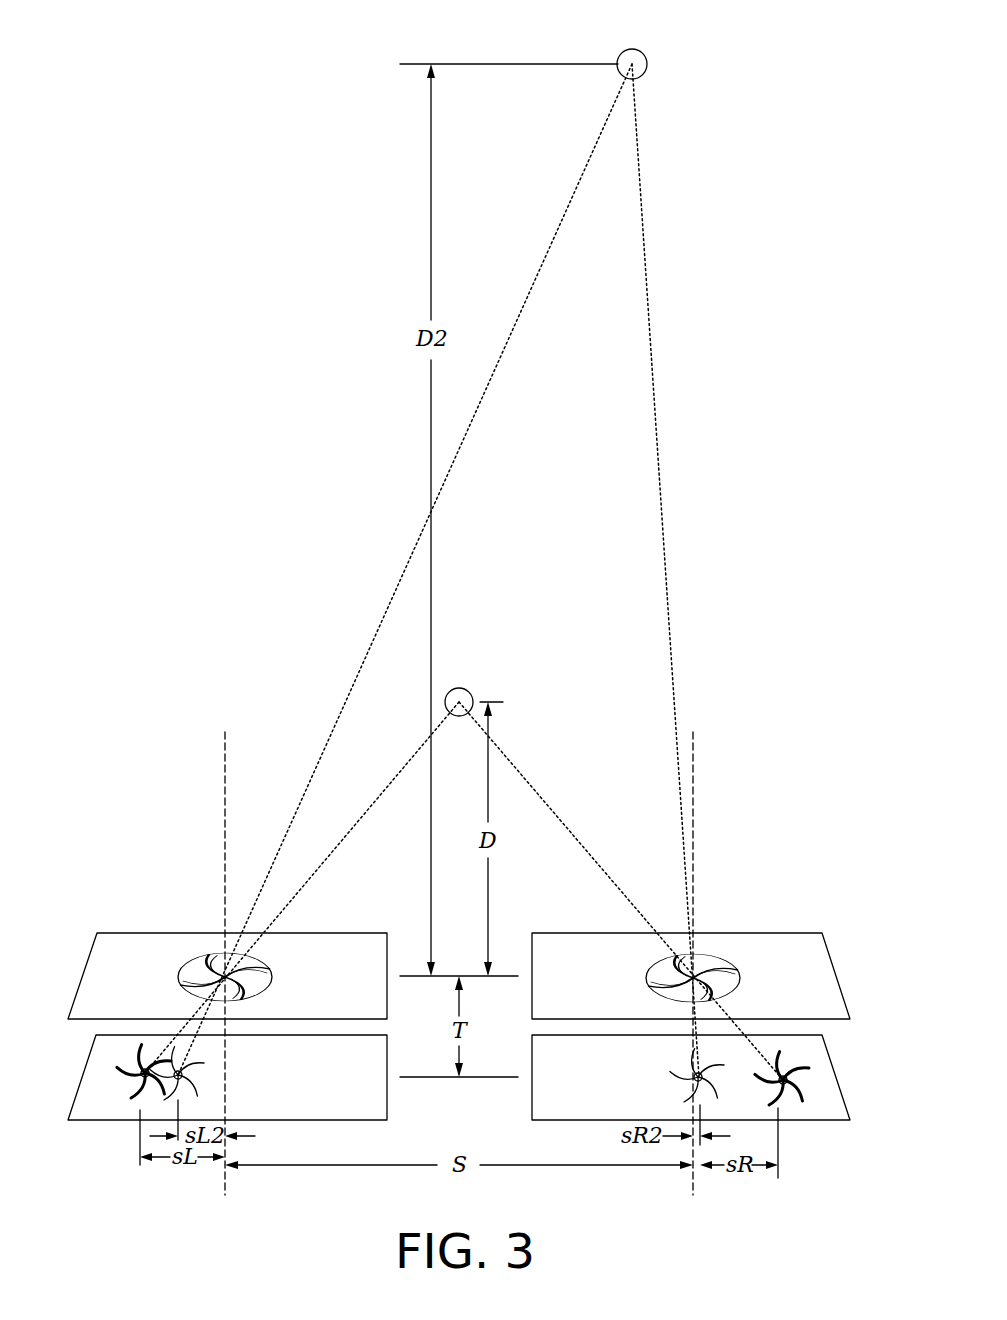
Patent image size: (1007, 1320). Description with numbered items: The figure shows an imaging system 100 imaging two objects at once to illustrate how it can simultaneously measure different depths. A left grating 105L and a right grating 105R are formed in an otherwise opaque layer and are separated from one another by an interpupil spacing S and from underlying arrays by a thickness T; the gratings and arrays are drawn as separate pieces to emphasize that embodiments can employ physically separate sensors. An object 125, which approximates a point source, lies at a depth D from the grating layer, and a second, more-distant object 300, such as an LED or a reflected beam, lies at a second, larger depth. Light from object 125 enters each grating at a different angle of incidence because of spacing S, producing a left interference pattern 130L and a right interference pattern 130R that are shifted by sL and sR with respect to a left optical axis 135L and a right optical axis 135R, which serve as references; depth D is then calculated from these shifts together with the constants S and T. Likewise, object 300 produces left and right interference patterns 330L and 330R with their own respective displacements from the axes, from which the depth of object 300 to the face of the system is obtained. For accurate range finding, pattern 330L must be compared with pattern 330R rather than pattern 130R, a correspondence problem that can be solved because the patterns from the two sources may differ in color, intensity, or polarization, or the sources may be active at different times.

The imaging system 100 is at (238, 54).
The second object 300 is at (640, 50).
The object 125 is at (465, 688).
The left optical axis 135L is at (225, 786).
The right optical axis 135R is at (693, 786).
The left grating 105L is at (180, 975).
The right grating 105R is at (738, 975).
The left interference pattern 130L is at (142, 1090).
The right interference pattern 130R is at (786, 1096).
The left interference pattern of second object 330L is at (208, 1088).
The right interference pattern of second object 330R is at (695, 1092).